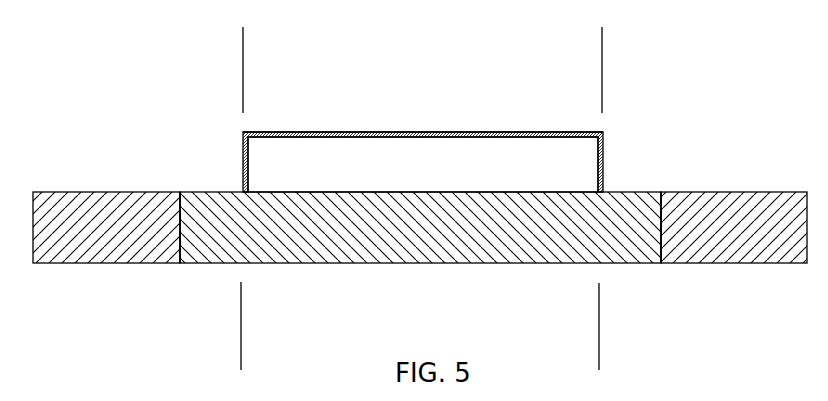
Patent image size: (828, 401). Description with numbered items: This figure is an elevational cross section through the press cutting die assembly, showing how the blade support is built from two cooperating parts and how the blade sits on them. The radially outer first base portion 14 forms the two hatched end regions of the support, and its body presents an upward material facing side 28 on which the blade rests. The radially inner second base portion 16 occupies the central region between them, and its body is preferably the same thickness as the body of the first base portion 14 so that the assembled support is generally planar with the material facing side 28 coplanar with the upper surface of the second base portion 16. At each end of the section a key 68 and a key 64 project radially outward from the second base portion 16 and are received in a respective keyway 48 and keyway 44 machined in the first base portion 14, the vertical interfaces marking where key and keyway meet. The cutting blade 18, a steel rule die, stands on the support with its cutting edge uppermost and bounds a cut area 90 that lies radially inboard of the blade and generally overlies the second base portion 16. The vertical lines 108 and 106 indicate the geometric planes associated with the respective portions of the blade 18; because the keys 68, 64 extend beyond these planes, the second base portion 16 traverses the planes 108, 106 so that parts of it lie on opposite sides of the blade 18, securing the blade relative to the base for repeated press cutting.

The first base portion 14 is at (90, 213).
The second base portion 16 is at (547, 250).
The blade 18 is at (602, 149).
The material facing side 28 is at (470, 132).
The keyway 44 is at (661, 243).
The keyway 48 is at (180, 238).
The key 64 is at (632, 208).
The key 68 is at (197, 217).
The cut area 90 is at (324, 124).
The geometric plane 106 is at (600, 300).
The geometric plane 108 is at (242, 302).